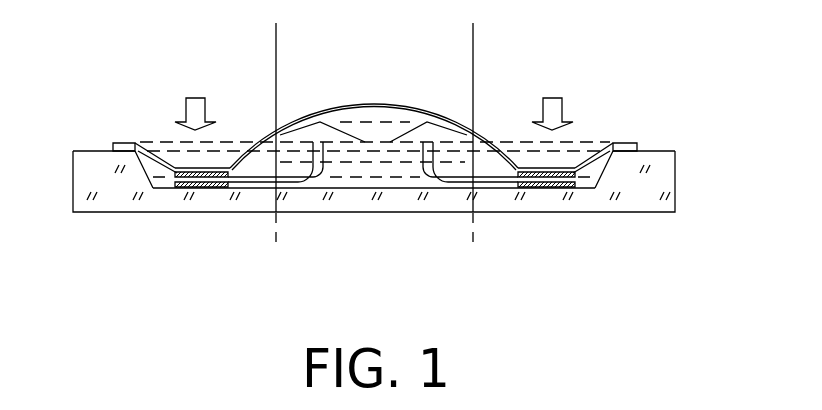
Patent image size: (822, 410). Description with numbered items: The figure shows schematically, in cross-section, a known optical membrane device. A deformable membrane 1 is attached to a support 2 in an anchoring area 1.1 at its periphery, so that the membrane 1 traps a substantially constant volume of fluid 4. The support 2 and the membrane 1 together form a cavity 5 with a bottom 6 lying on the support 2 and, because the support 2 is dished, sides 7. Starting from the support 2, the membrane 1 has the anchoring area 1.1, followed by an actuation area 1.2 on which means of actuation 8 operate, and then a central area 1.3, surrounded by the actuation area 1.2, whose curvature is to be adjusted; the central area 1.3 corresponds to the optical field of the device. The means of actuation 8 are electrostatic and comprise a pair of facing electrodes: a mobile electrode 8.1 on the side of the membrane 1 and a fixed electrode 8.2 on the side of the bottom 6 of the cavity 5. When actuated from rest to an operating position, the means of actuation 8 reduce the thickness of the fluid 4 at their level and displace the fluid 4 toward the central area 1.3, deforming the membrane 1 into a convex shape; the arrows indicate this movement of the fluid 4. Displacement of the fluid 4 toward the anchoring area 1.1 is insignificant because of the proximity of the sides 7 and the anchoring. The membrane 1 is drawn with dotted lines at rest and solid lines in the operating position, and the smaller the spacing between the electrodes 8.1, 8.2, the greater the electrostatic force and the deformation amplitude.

The membrane 1 is at (388, 135).
The anchoring area 1.1 is at (630, 143).
The actuation area 1.2 is at (556, 169).
The central area 1.3 is at (388, 101).
The support 2 is at (657, 185).
The fluid 4 is at (405, 180).
The cavity 5 is at (348, 182).
The bottom 6 is at (447, 200).
The sides 7 is at (143, 170).
The means of actuation 8 is at (355, 241).
The mobile electrode 8.1 is at (375, 223).
The fixed electrode 8.2 is at (182, 188).